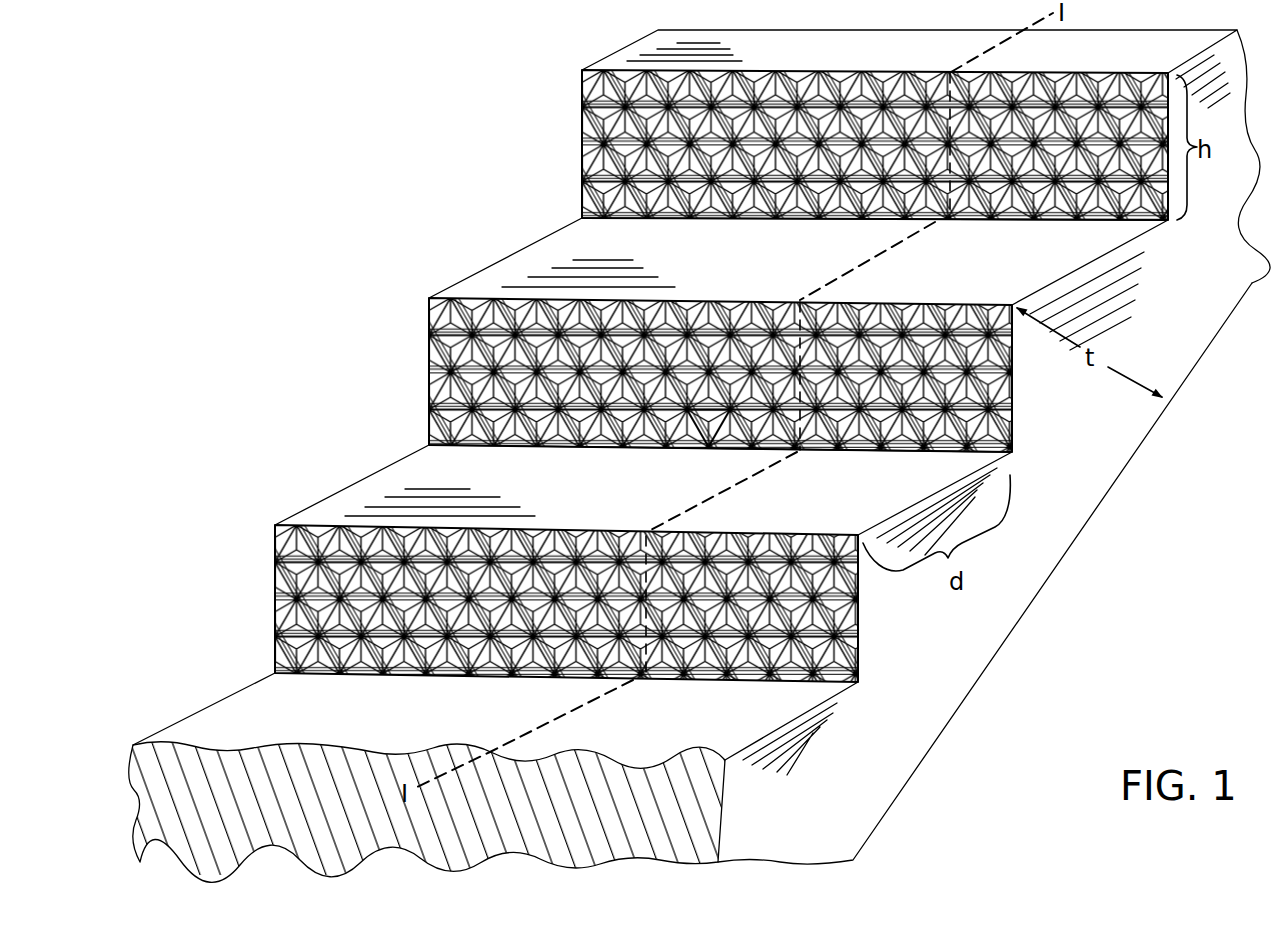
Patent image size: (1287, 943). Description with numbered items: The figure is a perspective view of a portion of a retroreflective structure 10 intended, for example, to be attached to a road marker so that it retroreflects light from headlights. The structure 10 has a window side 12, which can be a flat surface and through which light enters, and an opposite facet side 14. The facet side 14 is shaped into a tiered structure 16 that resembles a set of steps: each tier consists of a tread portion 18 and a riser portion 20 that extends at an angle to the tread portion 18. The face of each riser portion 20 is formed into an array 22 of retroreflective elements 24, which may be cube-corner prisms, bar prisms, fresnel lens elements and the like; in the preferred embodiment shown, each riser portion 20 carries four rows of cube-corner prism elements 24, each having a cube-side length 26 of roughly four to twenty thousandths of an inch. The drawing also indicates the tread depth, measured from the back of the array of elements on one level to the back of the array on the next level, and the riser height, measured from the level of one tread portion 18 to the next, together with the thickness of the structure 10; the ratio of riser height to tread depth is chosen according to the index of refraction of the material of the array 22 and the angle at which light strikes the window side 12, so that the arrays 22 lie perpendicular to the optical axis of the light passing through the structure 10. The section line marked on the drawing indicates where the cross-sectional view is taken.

The retroreflective structure 10 is at (416, 165).
The window side 12 is at (952, 727).
The facet side 14 is at (760, 342).
The tiered structure 16 is at (534, 241).
The tread portion 18 is at (372, 485).
The riser portion 20 is at (682, 395).
The array 22 is at (600, 126).
The retroreflective elements 24 is at (307, 610).
The cube-side length 26 is at (700, 431).